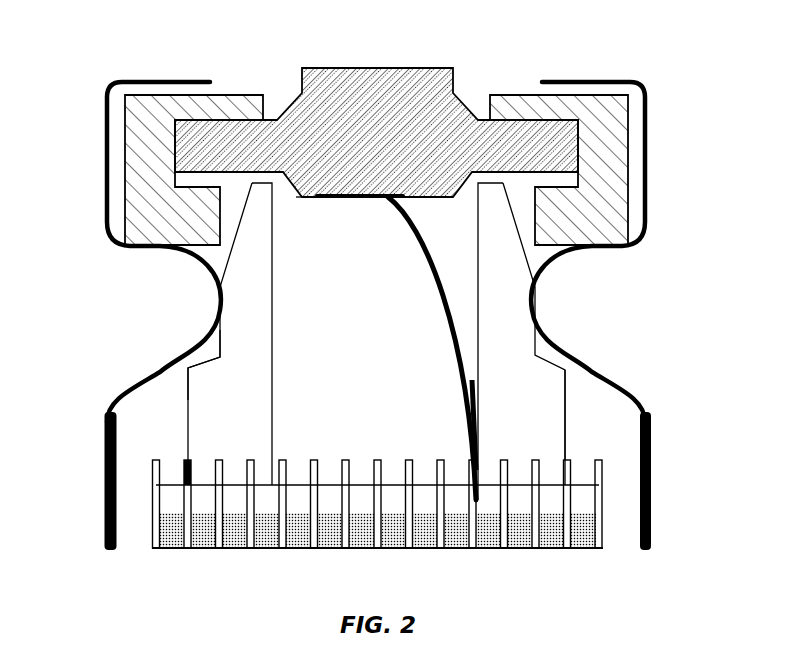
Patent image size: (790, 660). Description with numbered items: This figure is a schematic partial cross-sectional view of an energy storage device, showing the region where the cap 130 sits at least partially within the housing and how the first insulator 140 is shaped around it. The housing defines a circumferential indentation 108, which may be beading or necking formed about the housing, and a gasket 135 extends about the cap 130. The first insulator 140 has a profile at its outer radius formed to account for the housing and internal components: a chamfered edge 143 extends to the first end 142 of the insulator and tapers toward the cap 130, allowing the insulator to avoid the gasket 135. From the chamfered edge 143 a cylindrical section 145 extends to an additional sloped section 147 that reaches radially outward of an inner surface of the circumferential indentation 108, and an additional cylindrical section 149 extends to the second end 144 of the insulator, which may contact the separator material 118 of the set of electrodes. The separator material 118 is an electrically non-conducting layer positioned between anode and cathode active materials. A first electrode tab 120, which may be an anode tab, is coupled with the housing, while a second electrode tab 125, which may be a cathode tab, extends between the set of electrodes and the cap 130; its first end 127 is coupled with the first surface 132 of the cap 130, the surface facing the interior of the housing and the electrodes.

The circumferential indentation 108 is at (198, 278).
The separator material 118 is at (603, 508).
The first electrode tab 120 is at (117, 538).
The second electrode tab 125 is at (462, 385).
The first end of second electrode tab 127 is at (370, 197).
The cap 130 is at (332, 68).
The first surface 132 is at (422, 197).
The gasket 135 is at (112, 165).
The first insulator 140 is at (543, 277).
The first end of first insulator 142 is at (323, 197).
The chamfered edge 143 is at (203, 290).
The second end of first insulator 144 is at (303, 485).
The cylindrical section 145 is at (198, 345).
The additional sloped section 147 is at (558, 348).
The additional cylindrical section 149 is at (565, 405).